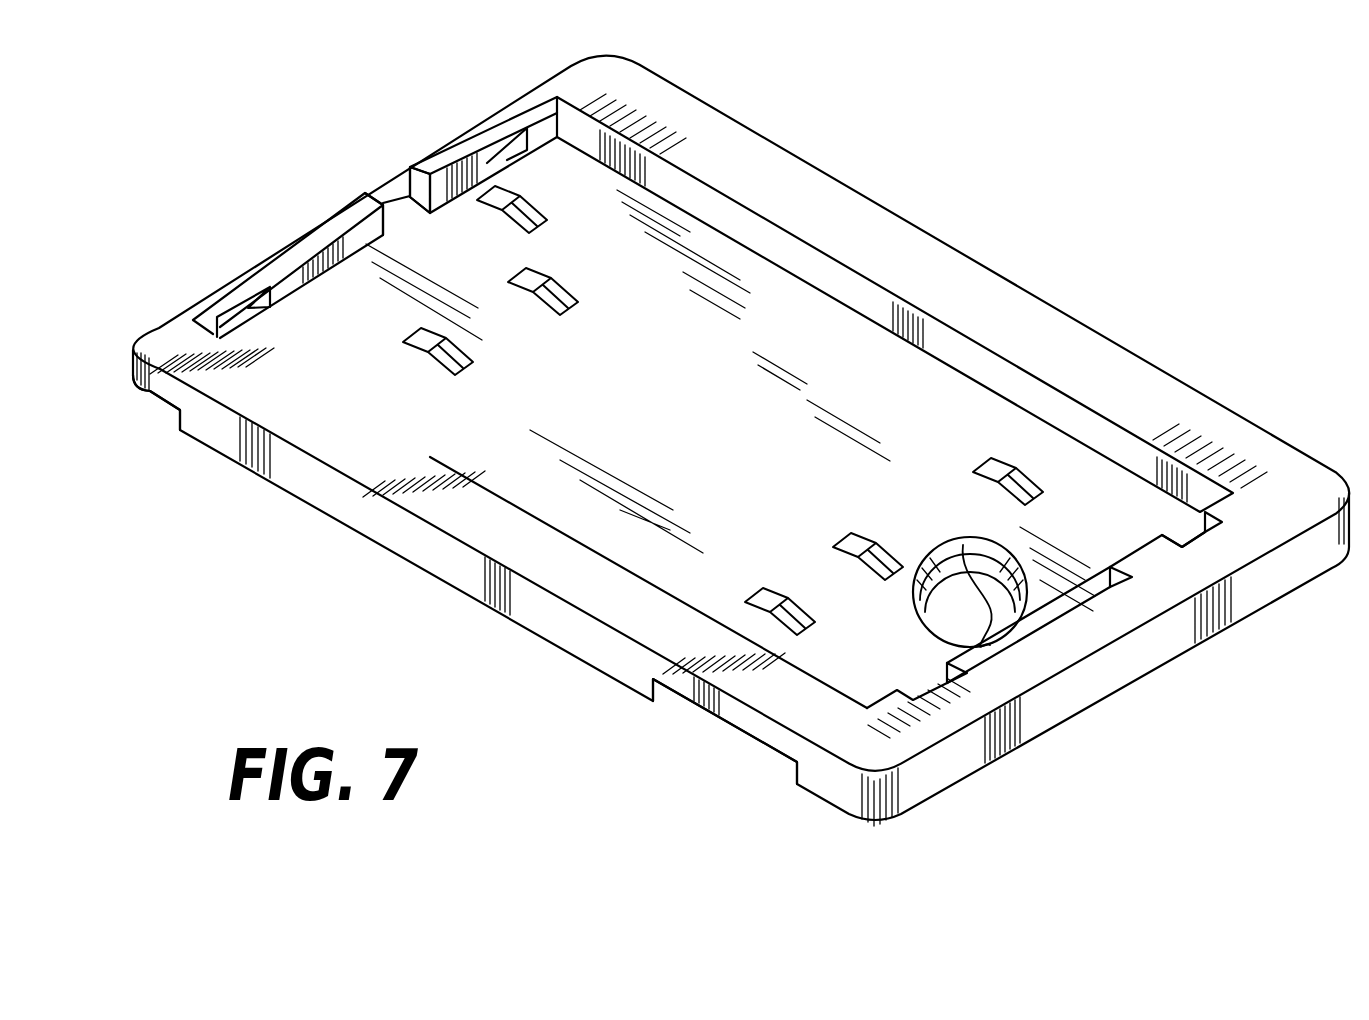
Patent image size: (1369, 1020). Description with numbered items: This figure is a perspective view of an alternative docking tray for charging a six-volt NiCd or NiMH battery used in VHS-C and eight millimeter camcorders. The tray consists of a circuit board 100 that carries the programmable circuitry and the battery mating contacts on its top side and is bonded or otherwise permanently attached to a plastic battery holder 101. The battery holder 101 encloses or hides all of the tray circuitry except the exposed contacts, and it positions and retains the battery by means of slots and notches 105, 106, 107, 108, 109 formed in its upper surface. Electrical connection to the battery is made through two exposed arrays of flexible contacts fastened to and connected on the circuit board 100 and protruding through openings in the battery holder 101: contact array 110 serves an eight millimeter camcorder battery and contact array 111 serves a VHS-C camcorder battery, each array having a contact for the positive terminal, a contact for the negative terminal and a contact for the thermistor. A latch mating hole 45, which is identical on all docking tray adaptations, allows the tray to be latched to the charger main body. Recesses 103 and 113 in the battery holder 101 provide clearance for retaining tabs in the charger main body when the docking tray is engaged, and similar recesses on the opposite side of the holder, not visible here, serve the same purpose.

The latch mating hole 45 is at (1007, 613).
The circuit board 100 is at (991, 617).
The plastic battery holder 101 is at (800, 343).
The recess 103 is at (727, 733).
The slot or notch 105 is at (930, 688).
The slot or notch 106 is at (1193, 520).
The slot or notch 107 is at (237, 319).
The slot or notch 108 is at (507, 157).
The slot or notch 109 is at (384, 196).
The contact array 110 is at (640, 257).
The contact array 111 is at (990, 415).
The recess 113 is at (158, 407).